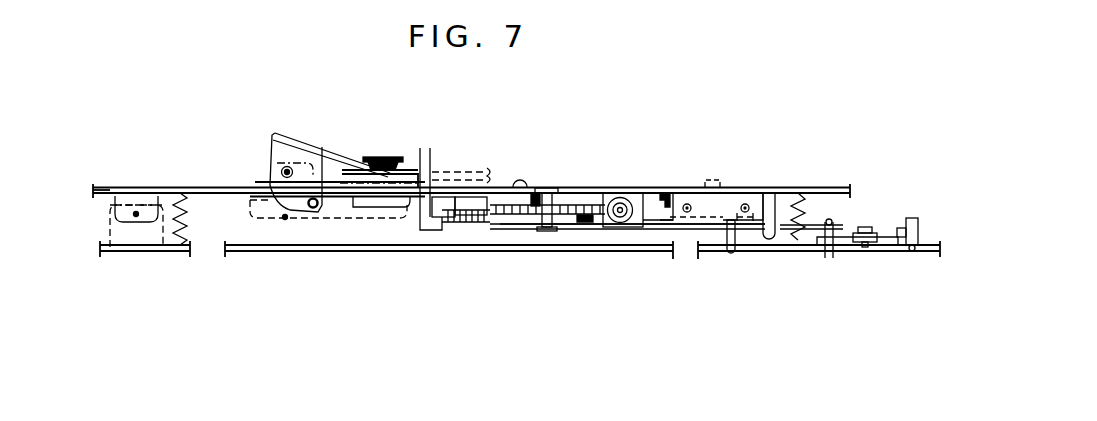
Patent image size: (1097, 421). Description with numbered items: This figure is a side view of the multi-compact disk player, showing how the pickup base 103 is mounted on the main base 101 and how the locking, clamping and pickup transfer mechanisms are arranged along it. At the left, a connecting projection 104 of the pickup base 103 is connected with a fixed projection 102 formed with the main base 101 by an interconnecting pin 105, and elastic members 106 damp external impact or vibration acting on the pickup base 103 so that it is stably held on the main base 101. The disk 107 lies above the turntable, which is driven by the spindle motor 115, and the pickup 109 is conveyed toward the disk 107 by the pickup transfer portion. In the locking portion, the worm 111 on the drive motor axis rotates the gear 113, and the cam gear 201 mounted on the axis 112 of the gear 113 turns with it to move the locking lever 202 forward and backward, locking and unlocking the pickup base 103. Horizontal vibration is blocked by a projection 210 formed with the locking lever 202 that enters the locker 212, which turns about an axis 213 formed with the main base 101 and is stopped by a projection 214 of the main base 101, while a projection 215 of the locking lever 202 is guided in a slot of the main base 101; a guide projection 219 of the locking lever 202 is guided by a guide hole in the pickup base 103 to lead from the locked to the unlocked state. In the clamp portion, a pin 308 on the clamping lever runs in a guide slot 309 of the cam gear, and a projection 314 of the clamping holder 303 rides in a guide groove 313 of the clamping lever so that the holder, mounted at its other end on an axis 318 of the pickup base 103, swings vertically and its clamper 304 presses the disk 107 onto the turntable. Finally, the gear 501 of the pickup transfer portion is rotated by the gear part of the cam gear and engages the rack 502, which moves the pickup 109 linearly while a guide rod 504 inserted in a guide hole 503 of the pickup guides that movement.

The main base 101 is at (180, 253).
The fixed projection 102 is at (143, 240).
The pickup base 103 is at (103, 187).
The connecting projection 104 is at (132, 197).
The interconnecting pin 105 is at (136, 215).
The elastic member 106 is at (180, 197).
The disk 107 is at (455, 172).
The pickup 109 is at (727, 200).
The worm 111 is at (615, 222).
The axis 112 is at (550, 189).
The gear 113 is at (567, 214).
The spindle motor 115 is at (368, 205).
The cam gear 201 is at (505, 222).
The locking lever 202 is at (653, 230).
The projection 210 is at (830, 237).
The locker 212 is at (887, 246).
The axis 213 is at (864, 226).
The projection 214 is at (915, 234).
The projection 215 is at (781, 198).
The guide projection 219 is at (736, 250).
The clamping holder 303 is at (302, 146).
The clamper 304 is at (380, 158).
The pin 308 is at (518, 178).
The guide slot 309 is at (537, 192).
The guide groove 313 is at (285, 217).
The projection 314 is at (312, 208).
The axis 318 is at (285, 168).
The gear 501 is at (640, 188).
The rack 502 is at (667, 192).
The guide hole 503 is at (687, 204).
The guide rod 504 is at (688, 216).